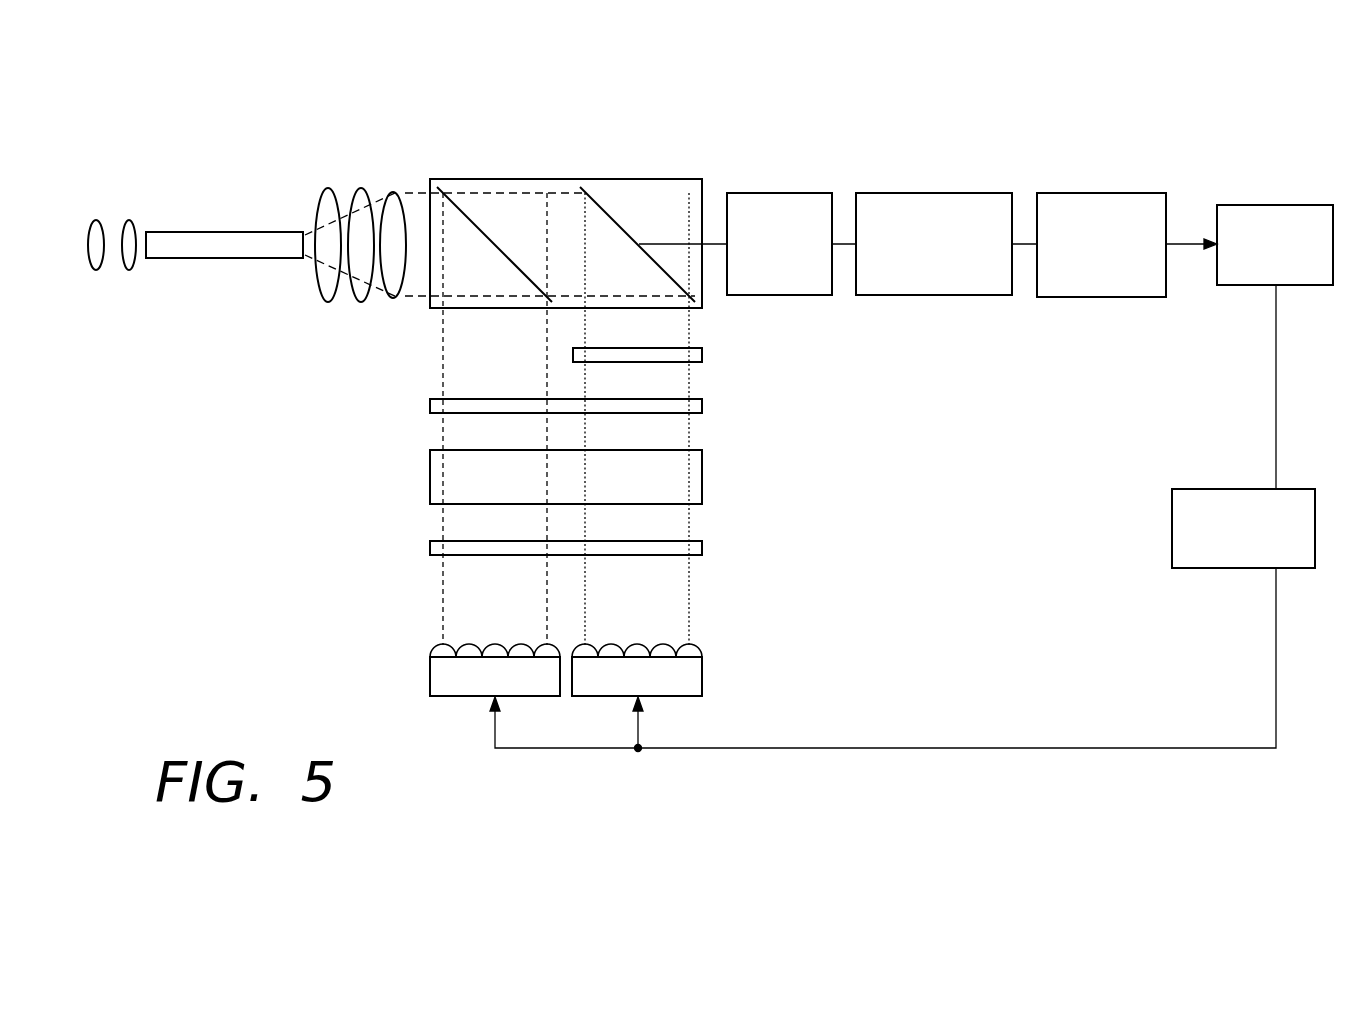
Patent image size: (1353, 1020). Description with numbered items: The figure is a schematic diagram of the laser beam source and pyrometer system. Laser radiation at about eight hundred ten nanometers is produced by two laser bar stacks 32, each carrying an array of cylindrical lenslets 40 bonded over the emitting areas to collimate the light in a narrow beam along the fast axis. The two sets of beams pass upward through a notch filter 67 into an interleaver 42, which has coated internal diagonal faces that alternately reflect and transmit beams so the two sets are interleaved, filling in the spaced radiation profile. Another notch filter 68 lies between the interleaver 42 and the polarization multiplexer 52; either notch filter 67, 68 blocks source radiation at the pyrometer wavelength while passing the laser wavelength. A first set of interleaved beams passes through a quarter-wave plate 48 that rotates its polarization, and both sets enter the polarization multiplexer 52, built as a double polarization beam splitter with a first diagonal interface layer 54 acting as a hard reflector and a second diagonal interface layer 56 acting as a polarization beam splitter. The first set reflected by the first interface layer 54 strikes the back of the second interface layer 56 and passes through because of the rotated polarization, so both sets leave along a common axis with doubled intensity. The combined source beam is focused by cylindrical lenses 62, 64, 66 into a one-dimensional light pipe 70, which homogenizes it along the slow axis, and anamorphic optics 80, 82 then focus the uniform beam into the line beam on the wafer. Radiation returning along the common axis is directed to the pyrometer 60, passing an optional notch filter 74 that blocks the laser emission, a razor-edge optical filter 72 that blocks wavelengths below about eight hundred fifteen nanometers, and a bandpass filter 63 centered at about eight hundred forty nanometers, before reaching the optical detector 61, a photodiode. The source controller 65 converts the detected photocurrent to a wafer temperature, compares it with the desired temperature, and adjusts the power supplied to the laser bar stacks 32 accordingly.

The laser bar stack 32 is at (445, 671).
The cylindrical lenslets 40 is at (488, 642).
The interleaver 42 is at (690, 471).
The quarter-wave plate 48 is at (700, 348).
The polarization multiplexer 52 is at (695, 177).
The first diagonal interface layer 54 is at (618, 214).
The second diagonal interface layer 56 is at (475, 212).
The pyrometer 60 is at (1204, 158).
The optical detector 61 is at (1274, 210).
The cylindrical lens 62 is at (384, 191).
The pyrometer bandpass filter 63 is at (1082, 196).
The cylindrical lens 64 is at (350, 190).
The source controller 65 is at (1185, 496).
The cylindrical lens 66 is at (318, 190).
The notch filter 67 is at (432, 543).
The notch filter 68 is at (432, 401).
The one-dimensional light pipe 70 is at (218, 243).
The razor-edge optical filter 72 is at (902, 196).
The notch filter 74 is at (772, 196).
The anamorphic optics 80 is at (94, 222).
The anamorphic optics 82 is at (130, 222).